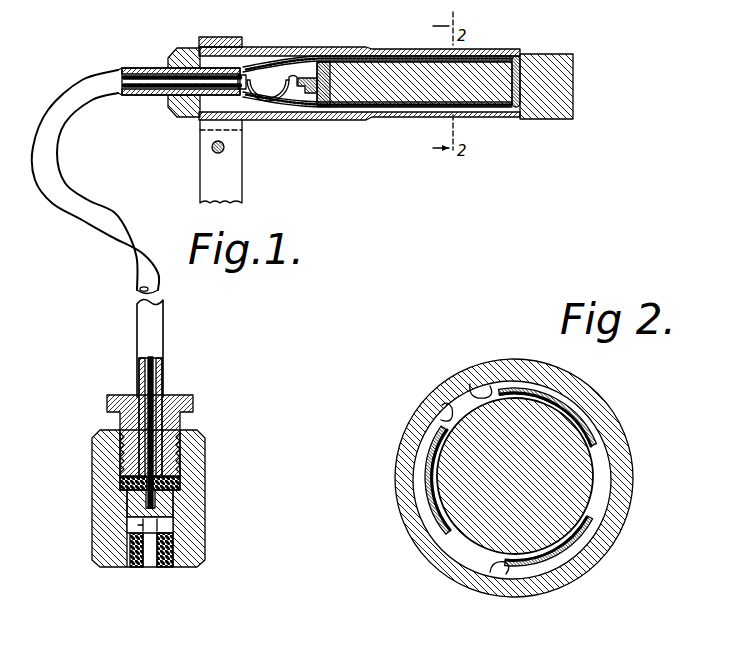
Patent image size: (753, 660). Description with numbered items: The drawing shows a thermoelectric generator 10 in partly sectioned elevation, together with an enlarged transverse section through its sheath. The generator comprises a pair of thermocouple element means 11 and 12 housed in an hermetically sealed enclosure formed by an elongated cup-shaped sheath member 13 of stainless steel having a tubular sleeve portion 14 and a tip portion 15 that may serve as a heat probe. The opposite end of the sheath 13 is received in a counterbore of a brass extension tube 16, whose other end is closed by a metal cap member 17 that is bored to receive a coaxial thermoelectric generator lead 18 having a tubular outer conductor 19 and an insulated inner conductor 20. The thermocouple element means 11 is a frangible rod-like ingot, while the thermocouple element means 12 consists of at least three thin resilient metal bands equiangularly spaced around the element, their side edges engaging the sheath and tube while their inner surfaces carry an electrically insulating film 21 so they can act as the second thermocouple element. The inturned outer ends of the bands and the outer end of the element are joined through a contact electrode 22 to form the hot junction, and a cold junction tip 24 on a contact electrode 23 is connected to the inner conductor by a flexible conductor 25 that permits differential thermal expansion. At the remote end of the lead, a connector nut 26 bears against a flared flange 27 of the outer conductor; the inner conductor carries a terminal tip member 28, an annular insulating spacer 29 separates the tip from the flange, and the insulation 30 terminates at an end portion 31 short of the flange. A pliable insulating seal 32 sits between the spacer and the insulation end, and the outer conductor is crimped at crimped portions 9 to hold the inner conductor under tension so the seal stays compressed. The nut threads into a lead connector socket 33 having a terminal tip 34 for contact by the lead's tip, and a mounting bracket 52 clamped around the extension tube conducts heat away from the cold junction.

In FIG. 1, the crimped portions 9 is at (137, 322).
In FIG. 1, the thermoelectric generator 10 is at (349, 45).
In FIG. 2, the thermoelectric generator 10 is at (406, 425).
In FIG. 1, the thermocouple element means 11 is at (415, 88).
In FIG. 2, the thermocouple element means 11 is at (600, 477).
In FIG. 1, the thermocouple element means 12 is at (484, 56).
In FIG. 2, the thermocouple element means 12 is at (595, 426).
In FIG. 1, the sheath member 13 is at (427, 121).
In FIG. 2, the sheath member 13 is at (573, 584).
In FIG. 1, the tubular sleeve portion 14 is at (418, 54).
In FIG. 1, the tip portion 15 is at (560, 78).
In FIG. 1, the extension tube 16 is at (255, 45).
In FIG. 1, the cap member 17 is at (176, 101).
In FIG. 1, the thermoelectric generator lead 18 is at (100, 240).
In FIG. 1, the outer conductor 19 is at (150, 96).
In FIG. 1, the inner conductor 20 is at (178, 75).
In FIG. 2, the insulating film 21 is at (472, 388).
In FIG. 1, the contact electrode 22 is at (517, 105).
In FIG. 1, the contact electrode 23 is at (310, 95).
In FIG. 1, the cold junction tip 24 is at (307, 78).
In FIG. 1, the flexible conductor 25 is at (276, 103).
In FIG. 1, the connector nut 26 is at (193, 405).
In FIG. 1, the flange 27 is at (178, 480).
In FIG. 1, the terminal tip member 28 is at (172, 500).
In FIG. 1, the insulating spacer 29 is at (128, 487).
In FIG. 1, the insulation 30 is at (132, 70).
In FIG. 1, the end portion 31 is at (165, 445).
In FIG. 1, the insulating seal 32 is at (98, 463).
In FIG. 1, the lead connector socket 33 is at (195, 545).
In FIG. 1, the terminal tip 34 is at (140, 523).
In FIG. 1, the mounting bracket 52 is at (226, 182).